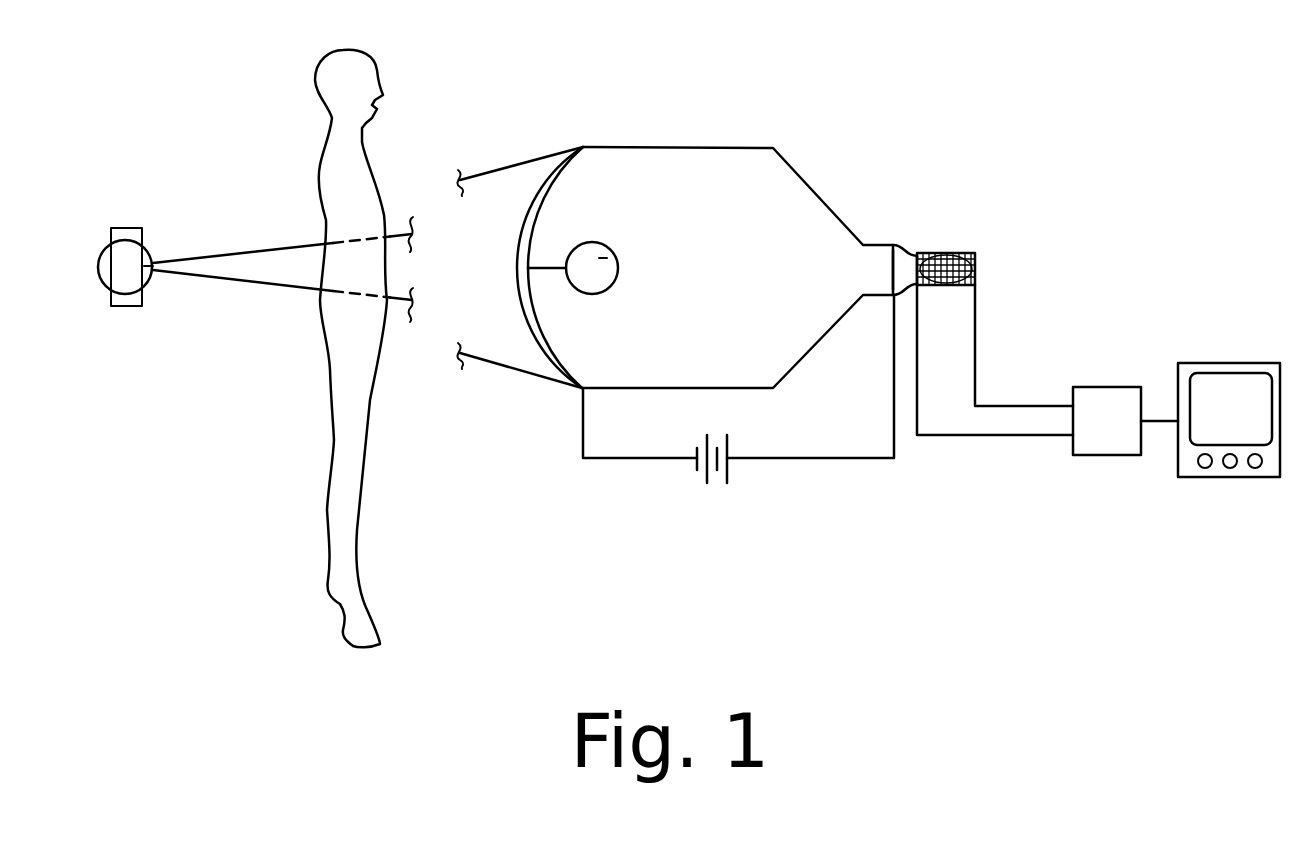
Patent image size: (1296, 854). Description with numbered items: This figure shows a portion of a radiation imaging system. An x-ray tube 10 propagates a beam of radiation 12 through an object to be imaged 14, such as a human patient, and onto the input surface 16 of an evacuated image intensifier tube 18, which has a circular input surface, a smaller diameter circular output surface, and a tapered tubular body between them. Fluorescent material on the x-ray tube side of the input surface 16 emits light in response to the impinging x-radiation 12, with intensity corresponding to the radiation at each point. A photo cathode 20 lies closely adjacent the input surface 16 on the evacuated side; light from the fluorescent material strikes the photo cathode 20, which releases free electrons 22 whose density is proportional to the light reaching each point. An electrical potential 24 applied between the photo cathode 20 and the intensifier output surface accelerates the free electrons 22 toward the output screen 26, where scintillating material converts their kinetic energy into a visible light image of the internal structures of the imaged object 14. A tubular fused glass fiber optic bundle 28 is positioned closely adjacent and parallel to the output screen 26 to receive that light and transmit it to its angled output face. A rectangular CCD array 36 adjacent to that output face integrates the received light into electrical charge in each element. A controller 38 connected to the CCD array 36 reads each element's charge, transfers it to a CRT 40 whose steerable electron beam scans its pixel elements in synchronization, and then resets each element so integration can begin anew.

The x-ray tube 10 is at (127, 267).
The beam of radiation 12 is at (268, 234).
The object to be imaged 14 is at (348, 83).
The input surface 16 is at (528, 204).
The image intensifier tube 18 is at (746, 131).
The photo cathode 20 is at (537, 233).
The free electrons 22 is at (609, 249).
The electrical potential 24 is at (712, 488).
The output screen 26 is at (892, 272).
The fiber optic bundle 28 is at (907, 258).
The CCD array 36 is at (950, 252).
The controller 38 is at (1107, 402).
The CRT 40 is at (1230, 365).